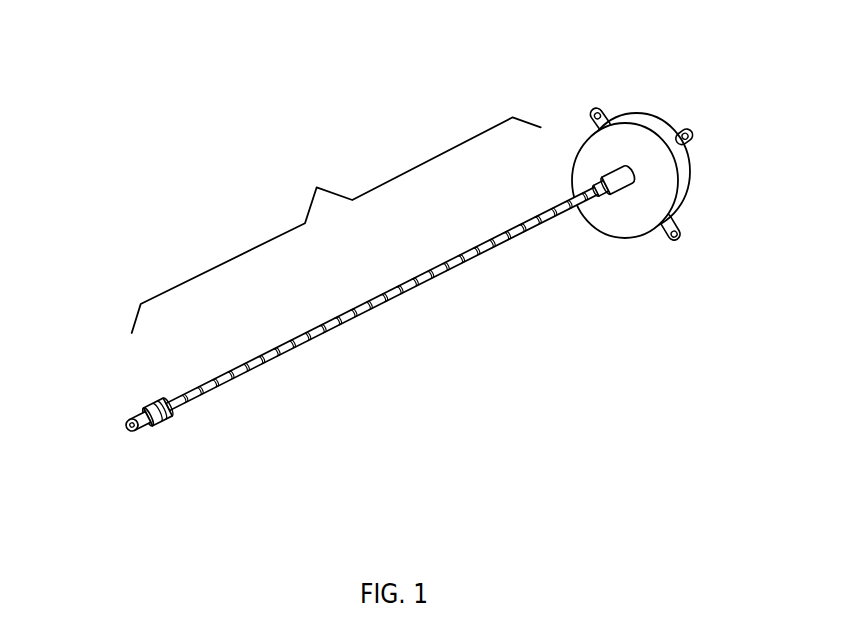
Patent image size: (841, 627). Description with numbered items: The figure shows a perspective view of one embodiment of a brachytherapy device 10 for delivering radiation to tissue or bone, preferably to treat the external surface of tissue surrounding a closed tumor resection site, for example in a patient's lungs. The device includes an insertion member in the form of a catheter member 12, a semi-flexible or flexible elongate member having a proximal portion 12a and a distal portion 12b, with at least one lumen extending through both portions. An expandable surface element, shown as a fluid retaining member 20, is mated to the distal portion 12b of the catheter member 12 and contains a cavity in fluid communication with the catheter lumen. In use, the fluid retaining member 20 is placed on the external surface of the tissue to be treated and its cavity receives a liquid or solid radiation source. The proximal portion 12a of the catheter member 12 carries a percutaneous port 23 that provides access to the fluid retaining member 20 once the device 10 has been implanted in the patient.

The brachytherapy device 10 is at (147, 72).
The catheter member 12 is at (336, 225).
The proximal portion 12a is at (203, 428).
The distal portion 12b is at (587, 242).
The fluid retaining member 20 is at (579, 93).
The percutaneous port 23 is at (128, 420).